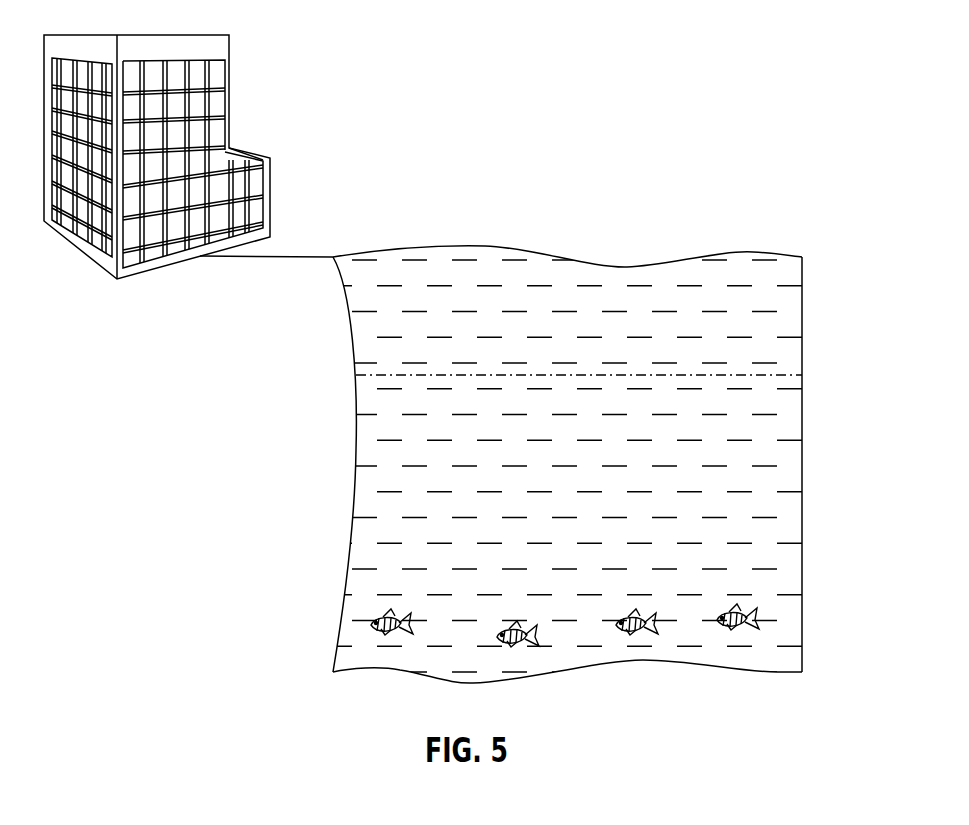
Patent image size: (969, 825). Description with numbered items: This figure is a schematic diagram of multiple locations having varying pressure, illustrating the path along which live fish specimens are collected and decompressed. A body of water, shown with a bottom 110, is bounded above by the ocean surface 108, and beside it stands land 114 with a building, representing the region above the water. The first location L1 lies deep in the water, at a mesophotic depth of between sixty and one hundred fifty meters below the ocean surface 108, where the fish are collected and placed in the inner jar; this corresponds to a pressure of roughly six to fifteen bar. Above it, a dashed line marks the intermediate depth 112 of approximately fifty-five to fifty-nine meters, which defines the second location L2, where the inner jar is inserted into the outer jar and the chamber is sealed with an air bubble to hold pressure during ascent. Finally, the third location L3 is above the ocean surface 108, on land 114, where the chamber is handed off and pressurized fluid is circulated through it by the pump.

The ocean surface 108 is at (630, 267).
The bottom of body of water 110 is at (788, 662).
The intermediate depth 112 is at (778, 386).
The land 114 is at (287, 257).
The first location L1 is at (326, 618).
The second location L2 is at (340, 371).
The third location L3 is at (272, 225).